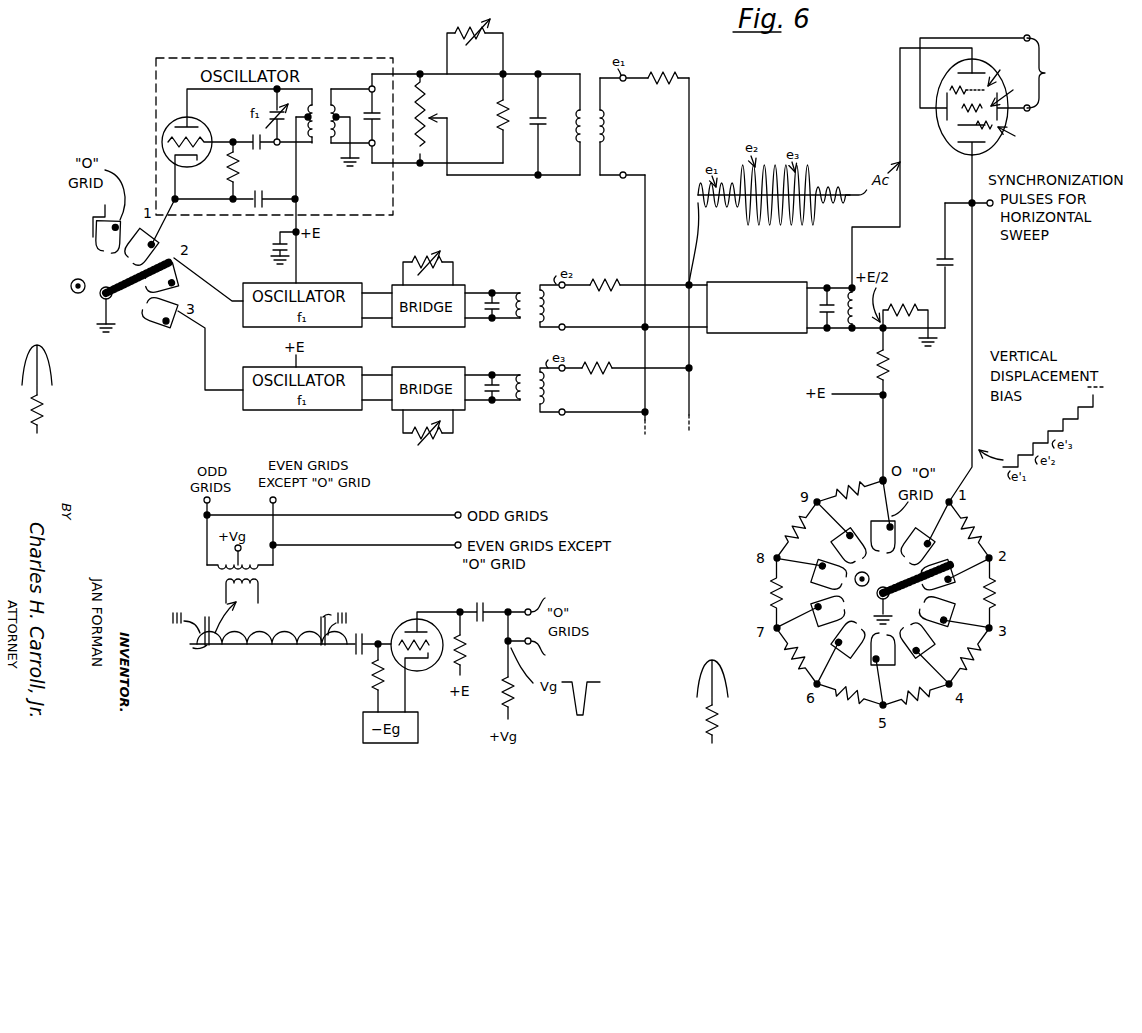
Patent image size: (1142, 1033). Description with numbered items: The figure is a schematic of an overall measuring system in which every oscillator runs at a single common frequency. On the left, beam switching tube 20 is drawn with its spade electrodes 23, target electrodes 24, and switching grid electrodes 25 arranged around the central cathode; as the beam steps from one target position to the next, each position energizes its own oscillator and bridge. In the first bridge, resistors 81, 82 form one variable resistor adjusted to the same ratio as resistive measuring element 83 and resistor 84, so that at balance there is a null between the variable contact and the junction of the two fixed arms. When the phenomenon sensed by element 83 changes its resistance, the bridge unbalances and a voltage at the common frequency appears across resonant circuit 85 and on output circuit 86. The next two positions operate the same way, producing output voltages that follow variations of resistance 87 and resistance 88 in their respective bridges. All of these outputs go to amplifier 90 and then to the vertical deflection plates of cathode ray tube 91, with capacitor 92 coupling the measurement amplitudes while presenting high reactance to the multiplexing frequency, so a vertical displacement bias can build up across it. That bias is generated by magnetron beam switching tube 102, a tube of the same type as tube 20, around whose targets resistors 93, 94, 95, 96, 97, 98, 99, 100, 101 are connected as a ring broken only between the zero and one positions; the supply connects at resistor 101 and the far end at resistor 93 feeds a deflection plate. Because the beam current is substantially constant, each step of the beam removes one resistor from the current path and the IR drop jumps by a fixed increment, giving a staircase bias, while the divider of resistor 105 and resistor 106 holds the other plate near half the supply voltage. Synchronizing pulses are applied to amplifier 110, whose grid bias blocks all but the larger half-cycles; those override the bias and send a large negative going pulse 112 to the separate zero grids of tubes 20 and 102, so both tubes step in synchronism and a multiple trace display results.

The tube 20 is at (48, 267).
The spade electrodes 23 is at (50, 355).
The target electrodes 24 is at (93, 241).
The switching grid electrodes 25 is at (166, 324).
The resistor 81 is at (424, 108).
The resistor 82 is at (420, 164).
The resistive measuring element 83 is at (475, 37).
The resistor 84 is at (501, 125).
The resonant circuit 85 is at (579, 82).
The output circuit 86 is at (606, 126).
The resistance 87 is at (444, 259).
The resistance 88 is at (453, 433).
The amplifier 90 is at (752, 336).
The cathode ray tube 91 is at (950, 148).
The capacitor 92 is at (936, 261).
The resistor 93 is at (976, 525).
The resistor 94 is at (996, 594).
The resistor 95 is at (977, 666).
The resistor 96 is at (926, 708).
The resistor 97 is at (846, 708).
The resistor 98 is at (790, 669).
The resistor 99 is at (768, 600).
The resistor 100 is at (788, 528).
The resistor 101 is at (828, 492).
The magnetron beam switching tube 102 is at (905, 581).
The resistor 105 is at (874, 378).
The resistor 106 is at (918, 309).
The amplifier 110 is at (442, 597).
The negative going pulse 112 is at (587, 704).